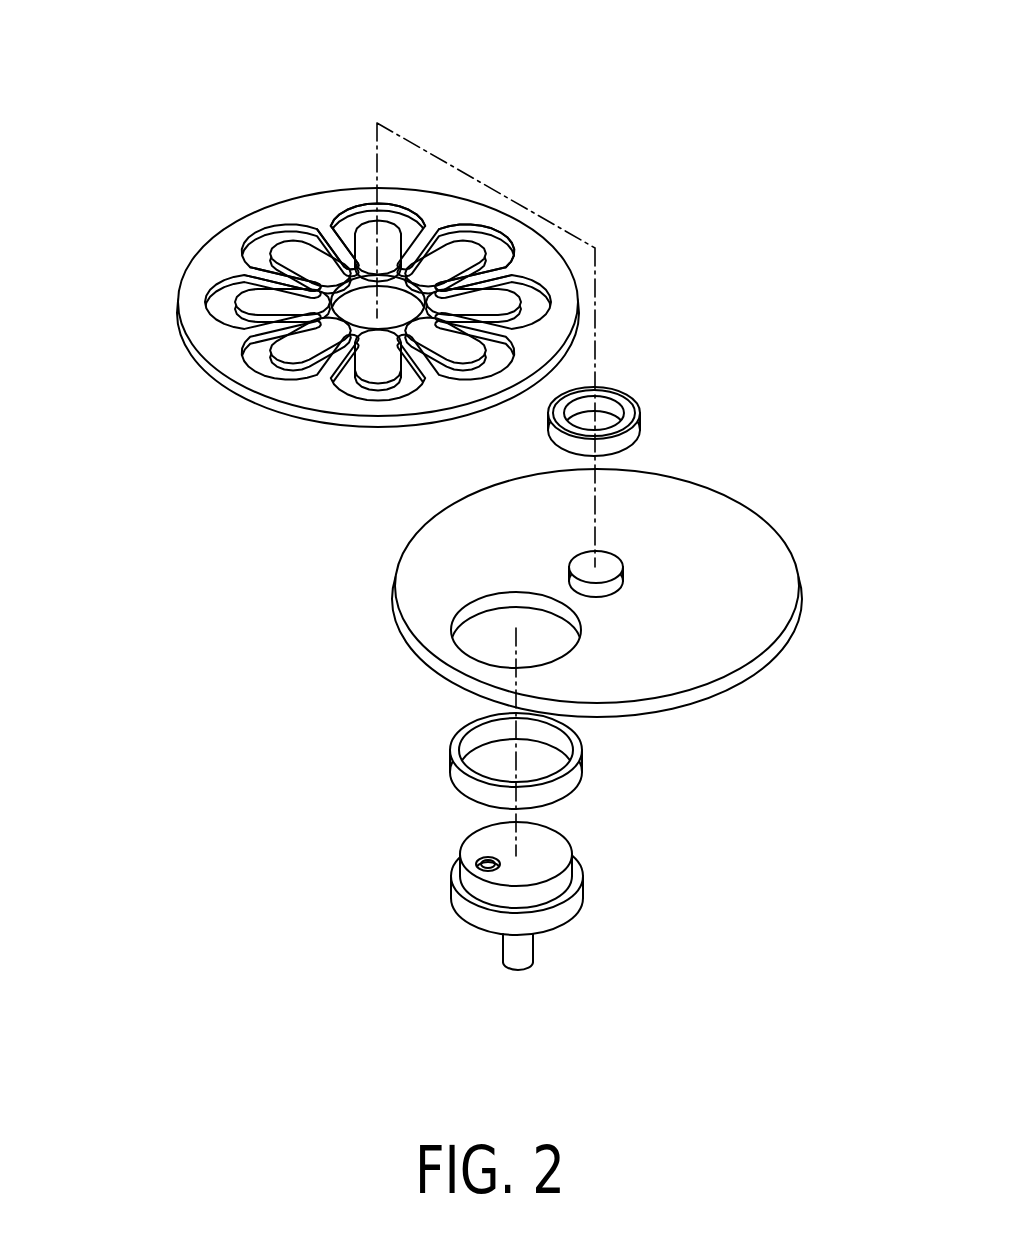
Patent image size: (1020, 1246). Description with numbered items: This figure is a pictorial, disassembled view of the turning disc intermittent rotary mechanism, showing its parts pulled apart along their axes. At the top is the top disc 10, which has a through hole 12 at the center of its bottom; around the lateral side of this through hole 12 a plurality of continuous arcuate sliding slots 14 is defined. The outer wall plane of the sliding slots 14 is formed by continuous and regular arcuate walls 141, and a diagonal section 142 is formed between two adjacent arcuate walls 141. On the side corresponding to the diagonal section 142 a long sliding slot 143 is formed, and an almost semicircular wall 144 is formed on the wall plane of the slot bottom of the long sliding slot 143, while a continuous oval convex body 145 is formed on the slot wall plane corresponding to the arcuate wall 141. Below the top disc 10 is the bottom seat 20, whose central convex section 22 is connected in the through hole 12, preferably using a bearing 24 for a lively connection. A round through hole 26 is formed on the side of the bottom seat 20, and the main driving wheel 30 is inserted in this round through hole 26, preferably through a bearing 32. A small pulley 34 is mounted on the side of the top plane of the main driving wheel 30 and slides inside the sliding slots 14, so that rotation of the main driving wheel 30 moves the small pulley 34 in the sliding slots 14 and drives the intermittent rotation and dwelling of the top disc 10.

The top disc 10 is at (323, 203).
The through hole 12 is at (397, 300).
The sliding slots 14 is at (345, 225).
The arcuate walls 141 is at (495, 237).
The diagonal section 142 is at (322, 228).
The long sliding slot 143 is at (348, 247).
The semicircular wall 144 is at (477, 273).
The oval convex body 145 is at (295, 257).
The bottom seat 20 is at (747, 567).
The central convex section 22 is at (610, 567).
The bearing 24 is at (640, 413).
The round through hole 26 is at (493, 638).
The main driving wheel 30 is at (565, 910).
The bearing 32 is at (555, 788).
The small pulley 34 is at (478, 873).